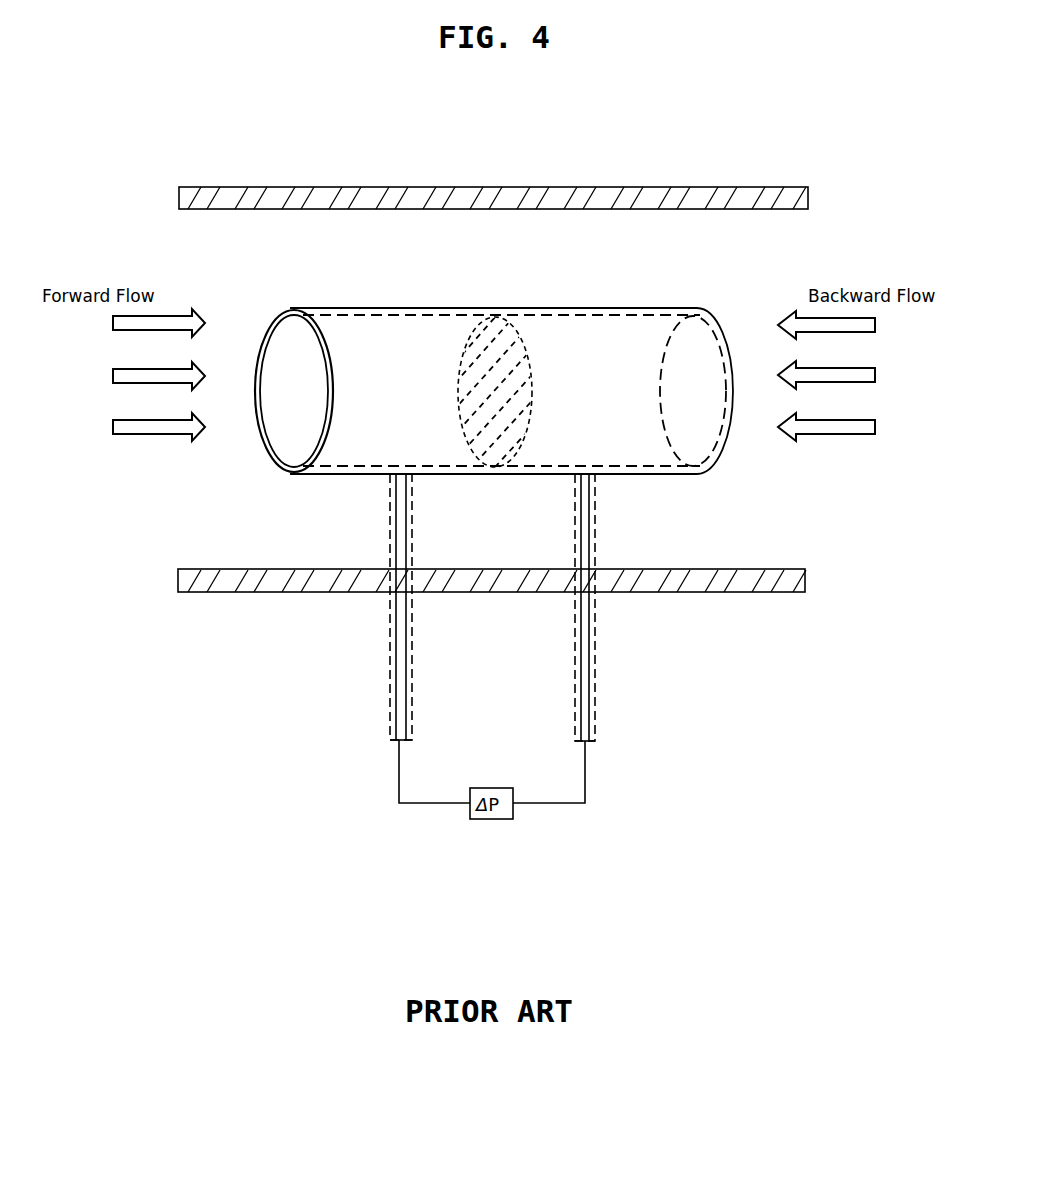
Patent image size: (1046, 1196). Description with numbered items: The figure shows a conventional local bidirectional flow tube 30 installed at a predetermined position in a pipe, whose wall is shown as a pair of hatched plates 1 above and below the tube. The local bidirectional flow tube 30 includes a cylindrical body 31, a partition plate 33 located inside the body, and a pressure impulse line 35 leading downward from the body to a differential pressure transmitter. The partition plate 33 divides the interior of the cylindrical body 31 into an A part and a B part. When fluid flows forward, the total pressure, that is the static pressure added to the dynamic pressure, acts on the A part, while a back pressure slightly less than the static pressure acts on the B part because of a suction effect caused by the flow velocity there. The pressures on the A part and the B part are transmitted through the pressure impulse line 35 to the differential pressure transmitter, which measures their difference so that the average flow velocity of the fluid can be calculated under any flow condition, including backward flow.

The duct wall 1 is at (743, 585).
The local bidirectional flow tube 30 is at (730, 458).
The cylindrical body 31 is at (275, 316).
The partition plate 33 is at (492, 347).
The pressure impulse line 35 is at (388, 647).